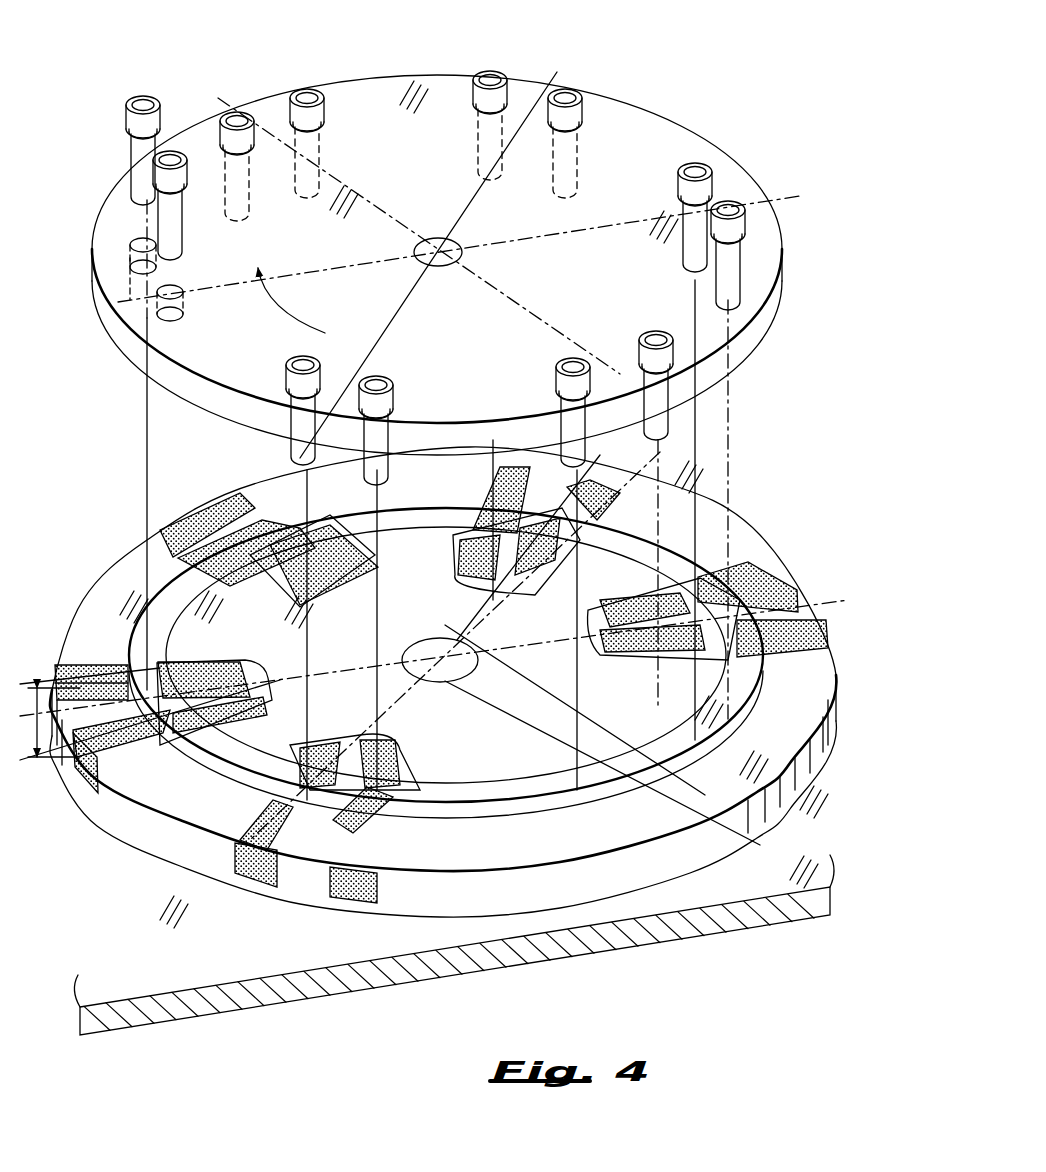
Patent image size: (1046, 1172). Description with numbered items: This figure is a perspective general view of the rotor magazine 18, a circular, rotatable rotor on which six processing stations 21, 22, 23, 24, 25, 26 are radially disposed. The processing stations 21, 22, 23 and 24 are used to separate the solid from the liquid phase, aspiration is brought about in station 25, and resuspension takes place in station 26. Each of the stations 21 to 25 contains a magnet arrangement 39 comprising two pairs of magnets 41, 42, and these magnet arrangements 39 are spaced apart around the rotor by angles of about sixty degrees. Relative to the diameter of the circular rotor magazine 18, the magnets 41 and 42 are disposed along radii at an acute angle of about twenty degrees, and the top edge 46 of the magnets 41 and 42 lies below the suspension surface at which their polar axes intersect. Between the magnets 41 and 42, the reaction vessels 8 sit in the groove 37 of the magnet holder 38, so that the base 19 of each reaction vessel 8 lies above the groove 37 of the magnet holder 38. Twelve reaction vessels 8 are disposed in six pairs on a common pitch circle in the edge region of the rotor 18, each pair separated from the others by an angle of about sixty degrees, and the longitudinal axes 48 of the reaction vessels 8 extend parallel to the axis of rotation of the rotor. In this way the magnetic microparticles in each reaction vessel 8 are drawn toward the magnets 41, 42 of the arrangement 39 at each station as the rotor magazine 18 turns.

The reaction vessel 8 is at (240, 107).
The rotor magazine 18 is at (684, 58).
The base of the reaction vessel 19 is at (132, 240).
The processing station 21 is at (290, 918).
The processing station 22 is at (70, 800).
The processing station 23 is at (215, 485).
The processing station 24 is at (518, 608).
The processing station 25 is at (818, 588).
The processing station 26 is at (710, 805).
The groove 37 is at (475, 800).
The magnet holder 38 is at (660, 870).
The magnet arrangement 39 is at (455, 553).
The magnet 41 is at (462, 580).
The magnet 42 is at (188, 525).
The top edge of the magnets 46 is at (310, 497).
The longitudinal axis of the reaction vessel 48 is at (146, 437).